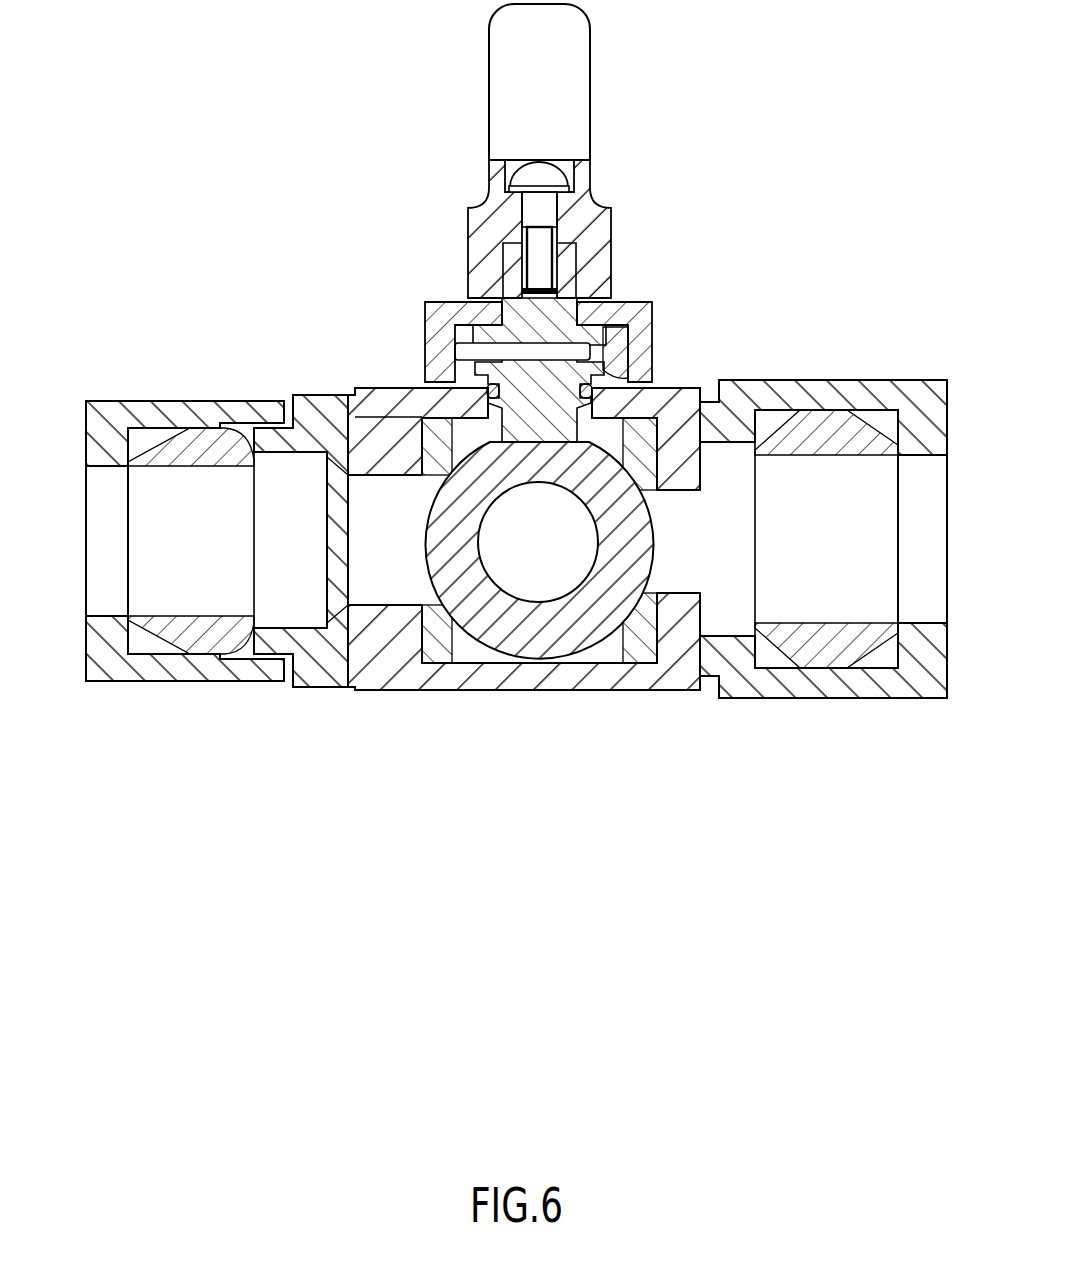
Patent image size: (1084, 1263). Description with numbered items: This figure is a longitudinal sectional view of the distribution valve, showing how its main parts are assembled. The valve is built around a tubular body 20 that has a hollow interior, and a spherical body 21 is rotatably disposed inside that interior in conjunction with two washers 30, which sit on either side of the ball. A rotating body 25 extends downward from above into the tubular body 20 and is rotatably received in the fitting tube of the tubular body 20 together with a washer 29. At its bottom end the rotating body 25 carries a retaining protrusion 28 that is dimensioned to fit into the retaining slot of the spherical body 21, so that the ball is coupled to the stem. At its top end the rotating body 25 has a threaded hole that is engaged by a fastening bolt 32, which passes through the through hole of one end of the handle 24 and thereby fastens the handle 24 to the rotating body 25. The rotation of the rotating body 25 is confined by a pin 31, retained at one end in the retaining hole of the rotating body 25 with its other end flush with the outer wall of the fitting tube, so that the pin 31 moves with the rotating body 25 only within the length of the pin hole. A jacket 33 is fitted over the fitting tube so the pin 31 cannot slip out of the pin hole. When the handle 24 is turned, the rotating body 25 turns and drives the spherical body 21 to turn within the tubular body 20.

The tubular body 20 is at (451, 680).
The spherical body 21 is at (536, 642).
The handle 24 is at (565, 79).
The rotating body 25 is at (510, 275).
The retaining protrusion 28 is at (568, 428).
The washer 29 is at (610, 362).
The washers 30 is at (642, 643).
The pin 31 is at (455, 345).
The fastening bolt 32 is at (553, 175).
The jacket 33 is at (636, 300).